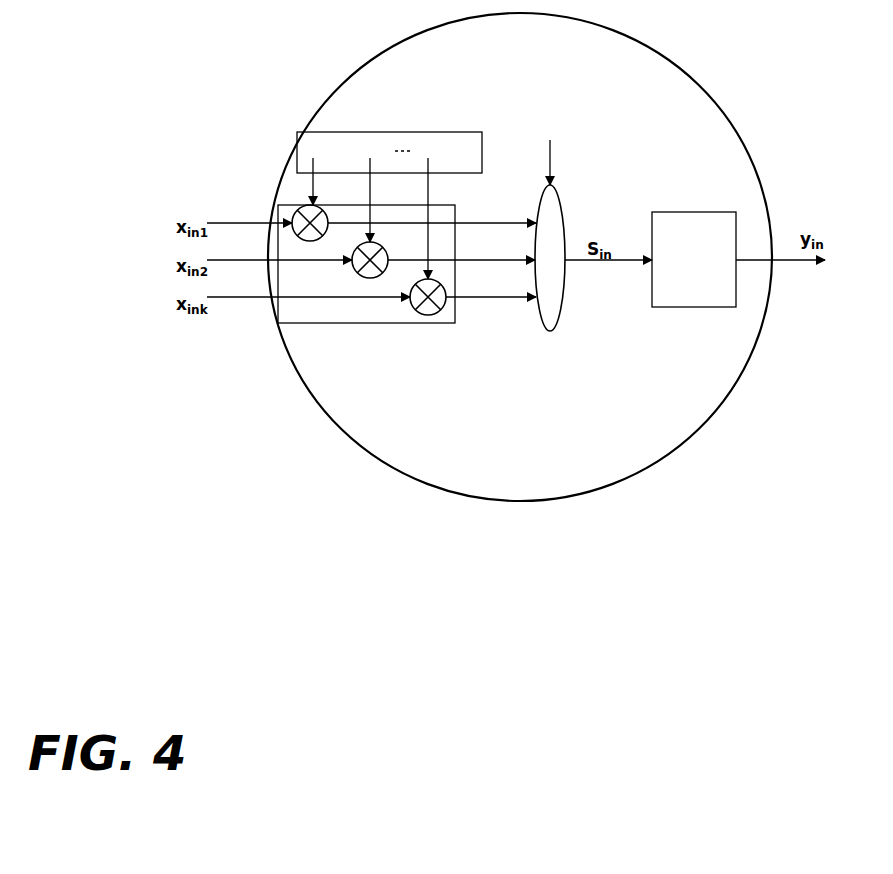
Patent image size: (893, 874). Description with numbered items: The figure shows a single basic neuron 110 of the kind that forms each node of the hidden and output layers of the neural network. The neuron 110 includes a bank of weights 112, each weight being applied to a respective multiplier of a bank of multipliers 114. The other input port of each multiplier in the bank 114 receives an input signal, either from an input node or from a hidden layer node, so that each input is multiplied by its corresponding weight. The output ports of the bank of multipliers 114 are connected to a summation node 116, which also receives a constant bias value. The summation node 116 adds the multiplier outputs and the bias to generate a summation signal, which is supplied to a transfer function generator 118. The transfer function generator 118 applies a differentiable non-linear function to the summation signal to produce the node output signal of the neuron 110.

The neuron 110 is at (635, 473).
The bank of weights 112 is at (338, 132).
The bank of multipliers 114 is at (313, 325).
The summation node 116 is at (558, 203).
The transfer function generator 118 is at (702, 305).